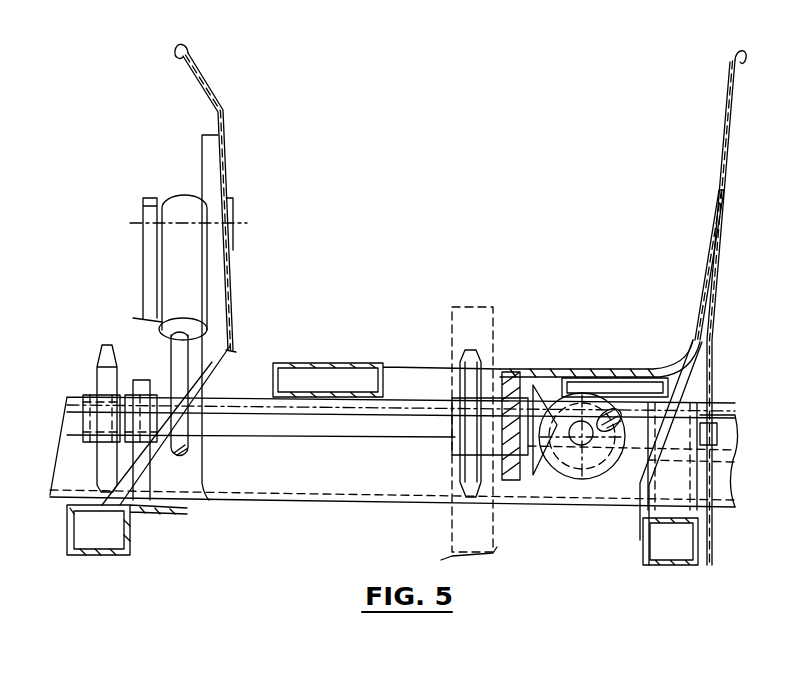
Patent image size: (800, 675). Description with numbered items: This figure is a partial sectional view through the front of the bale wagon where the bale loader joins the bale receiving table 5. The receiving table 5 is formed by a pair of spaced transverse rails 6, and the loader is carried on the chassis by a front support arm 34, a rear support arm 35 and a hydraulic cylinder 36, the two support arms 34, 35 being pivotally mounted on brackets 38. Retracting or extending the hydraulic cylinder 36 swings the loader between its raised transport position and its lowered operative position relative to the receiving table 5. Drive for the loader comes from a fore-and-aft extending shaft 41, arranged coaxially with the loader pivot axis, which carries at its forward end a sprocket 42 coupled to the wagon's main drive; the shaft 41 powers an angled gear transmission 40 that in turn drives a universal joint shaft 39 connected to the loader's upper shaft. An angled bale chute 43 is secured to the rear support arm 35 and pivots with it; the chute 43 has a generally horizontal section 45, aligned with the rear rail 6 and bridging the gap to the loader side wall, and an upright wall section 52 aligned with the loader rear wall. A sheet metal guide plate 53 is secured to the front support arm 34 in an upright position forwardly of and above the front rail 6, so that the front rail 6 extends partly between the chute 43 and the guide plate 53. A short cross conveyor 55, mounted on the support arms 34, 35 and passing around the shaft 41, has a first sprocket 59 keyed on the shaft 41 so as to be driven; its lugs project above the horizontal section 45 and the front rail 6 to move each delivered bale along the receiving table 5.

The bale receiving table 5 is at (312, 362).
The transverse rail 6 is at (340, 363).
The front support arm 34 is at (145, 382).
The rear support arm 35 is at (666, 566).
The hydraulic cylinder 36 is at (184, 195).
The bracket 38 is at (208, 500).
The universal joint shaft 39 is at (596, 480).
The angled gear transmission 40 is at (555, 472).
The fore-and-aft extending shaft 41 is at (352, 440).
The sprocket 42 is at (98, 368).
The angled bale chute 43 is at (728, 118).
The horizontal section of bale chute 45 is at (593, 372).
The upright wall section 52 is at (723, 162).
The sheet metal guide plate 53 is at (222, 134).
The cross conveyor 55 is at (493, 316).
The first sprocket 59 is at (458, 470).